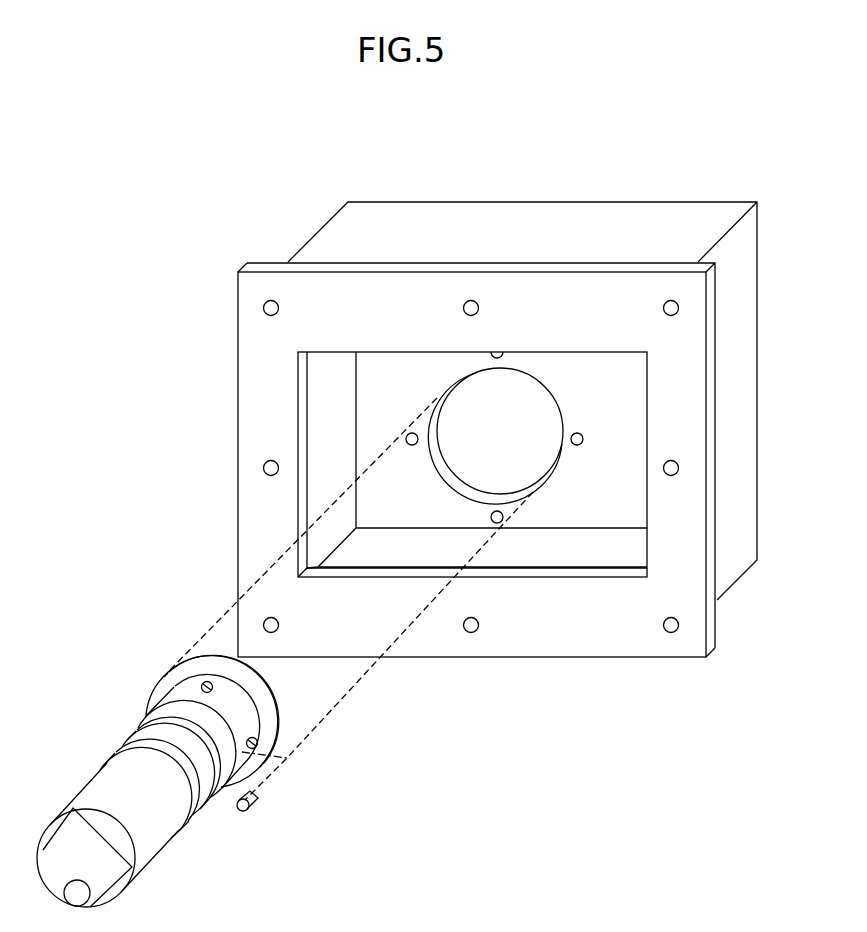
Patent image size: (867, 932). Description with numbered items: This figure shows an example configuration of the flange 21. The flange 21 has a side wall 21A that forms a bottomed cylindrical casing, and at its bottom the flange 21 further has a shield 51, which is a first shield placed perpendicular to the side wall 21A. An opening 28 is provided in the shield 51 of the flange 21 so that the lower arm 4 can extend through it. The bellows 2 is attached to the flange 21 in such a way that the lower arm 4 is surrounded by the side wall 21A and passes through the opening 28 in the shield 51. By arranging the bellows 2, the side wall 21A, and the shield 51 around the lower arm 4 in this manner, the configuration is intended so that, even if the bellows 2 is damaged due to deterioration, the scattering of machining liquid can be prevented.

The flange 21 is at (570, 156).
The shield 51 is at (611, 400).
The opening 28 is at (517, 470).
The side wall 21A is at (603, 545).
The bellows 2 is at (122, 737).
The lower arm 4 is at (140, 870).